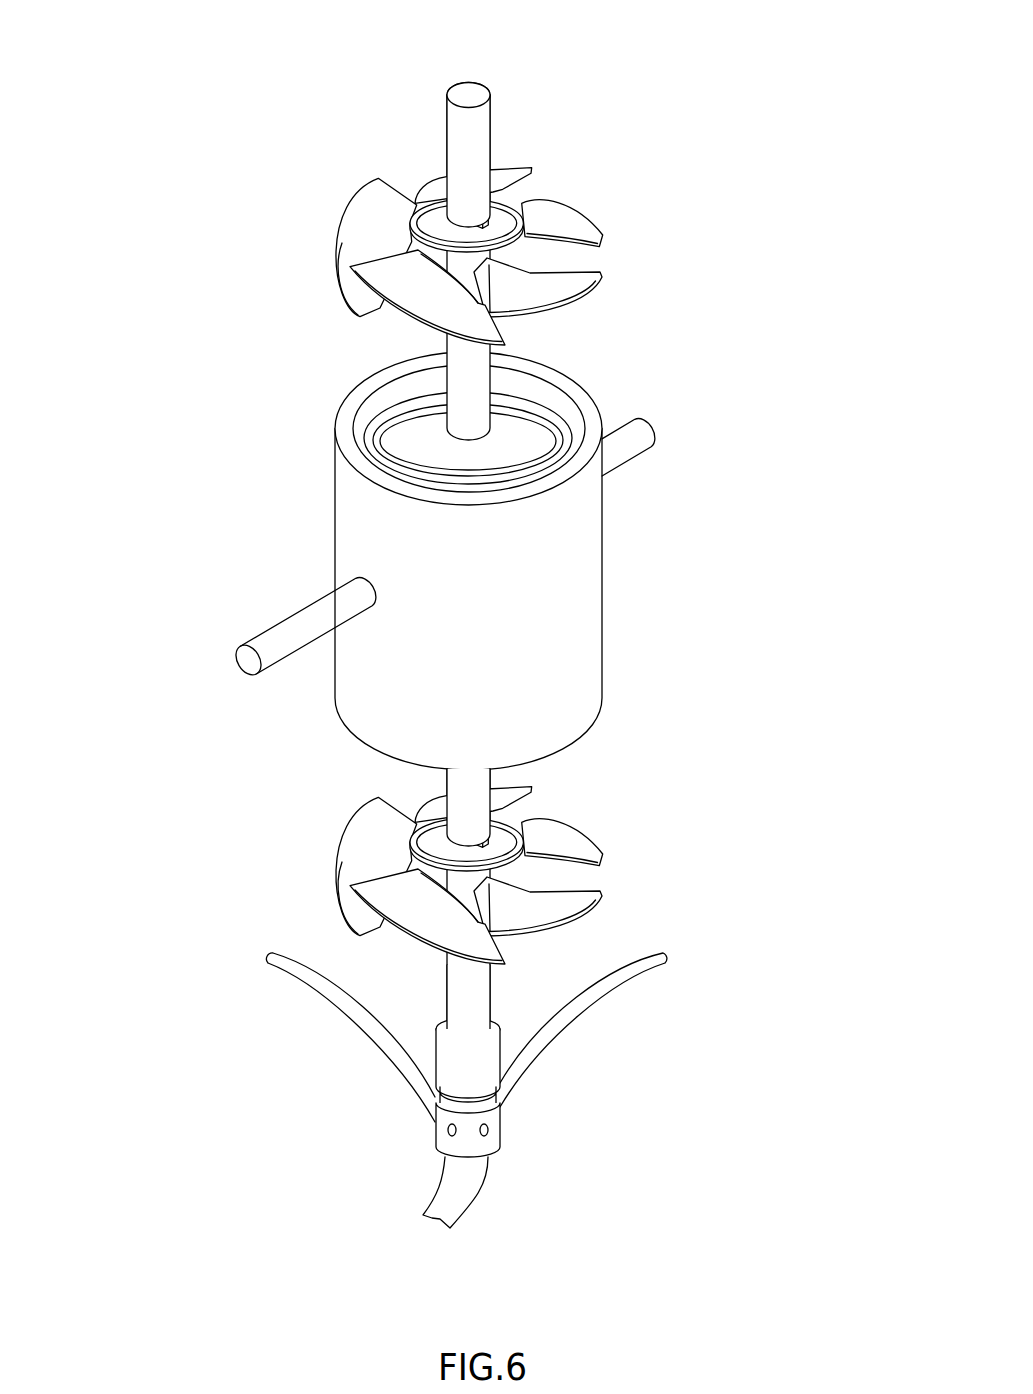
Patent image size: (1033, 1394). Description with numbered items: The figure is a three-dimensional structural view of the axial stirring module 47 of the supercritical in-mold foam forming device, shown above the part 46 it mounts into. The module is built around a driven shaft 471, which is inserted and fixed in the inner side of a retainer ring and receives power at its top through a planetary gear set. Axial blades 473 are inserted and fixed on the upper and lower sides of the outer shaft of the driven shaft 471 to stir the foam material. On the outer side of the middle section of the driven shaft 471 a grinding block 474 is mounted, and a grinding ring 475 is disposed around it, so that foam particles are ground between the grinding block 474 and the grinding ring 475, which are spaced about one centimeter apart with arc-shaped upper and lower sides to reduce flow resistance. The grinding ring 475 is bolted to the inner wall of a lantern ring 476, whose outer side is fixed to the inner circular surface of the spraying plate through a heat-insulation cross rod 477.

The connecting base 46 is at (487, 1075).
The axial stirring module 47 is at (472, 537).
The driven shaft 471 is at (463, 137).
The axial blades 473 is at (367, 230).
The grinding block 474 is at (507, 447).
The grinding ring 475 is at (383, 422).
The lantern ring 476 is at (348, 528).
The heat-insulation cross rod 477 is at (288, 637).